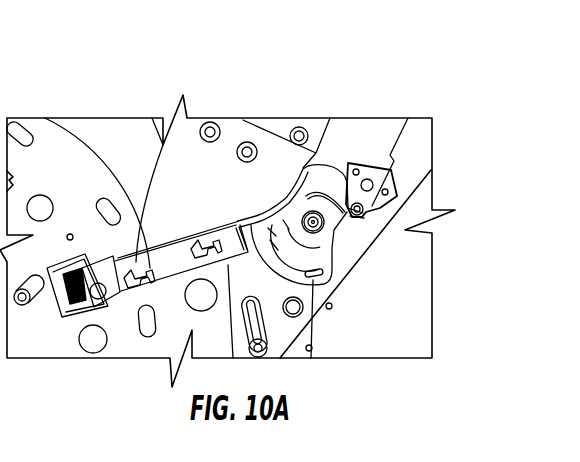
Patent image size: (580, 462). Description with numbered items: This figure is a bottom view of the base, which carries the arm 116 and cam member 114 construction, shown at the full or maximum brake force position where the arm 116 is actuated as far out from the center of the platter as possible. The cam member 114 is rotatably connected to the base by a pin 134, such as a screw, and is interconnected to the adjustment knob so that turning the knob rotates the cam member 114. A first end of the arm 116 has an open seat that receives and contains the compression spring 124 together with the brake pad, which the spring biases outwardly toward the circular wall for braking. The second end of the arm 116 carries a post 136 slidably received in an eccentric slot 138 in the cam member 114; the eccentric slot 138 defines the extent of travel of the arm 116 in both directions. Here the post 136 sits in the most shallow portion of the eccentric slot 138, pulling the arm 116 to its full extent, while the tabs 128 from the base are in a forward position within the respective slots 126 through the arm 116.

The cam member 114 is at (322, 183).
The arm 116 is at (200, 250).
The compression spring 124 is at (73, 266).
The slots 126 is at (190, 270).
The tabs 128 is at (172, 255).
The pin 134 is at (323, 223).
The post 136 is at (305, 128).
The eccentric slot 138 is at (312, 278).